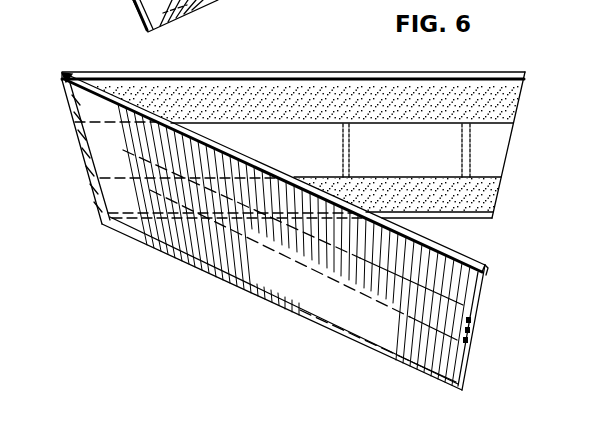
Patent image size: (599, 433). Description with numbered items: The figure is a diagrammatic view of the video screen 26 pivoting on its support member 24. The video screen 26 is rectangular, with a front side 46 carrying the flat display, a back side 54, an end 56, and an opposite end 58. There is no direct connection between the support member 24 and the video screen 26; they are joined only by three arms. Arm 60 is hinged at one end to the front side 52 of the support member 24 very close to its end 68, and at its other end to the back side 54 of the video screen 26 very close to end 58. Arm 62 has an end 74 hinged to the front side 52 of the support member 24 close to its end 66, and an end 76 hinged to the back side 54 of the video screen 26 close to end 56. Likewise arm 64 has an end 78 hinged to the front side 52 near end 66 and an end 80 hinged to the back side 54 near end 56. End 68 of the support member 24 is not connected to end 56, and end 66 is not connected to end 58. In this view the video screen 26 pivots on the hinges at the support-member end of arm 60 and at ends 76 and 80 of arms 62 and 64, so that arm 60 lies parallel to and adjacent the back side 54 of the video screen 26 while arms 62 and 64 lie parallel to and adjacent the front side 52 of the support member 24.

The support member 24 is at (327, 70).
The video screen 26 is at (182, 257).
The front side 46 is at (307, 283).
The front side 52 is at (483, 152).
The back side 54 is at (487, 277).
The end 56 is at (72, 117).
The end 58 is at (478, 308).
The arm 60 is at (328, 285).
The arm 62 is at (337, 115).
The arm 64 is at (463, 216).
The end 66 is at (510, 135).
The end 68 is at (62, 75).
The end 74 is at (513, 97).
The end 76 is at (72, 100).
The end 78 is at (482, 202).
The end 80 is at (110, 199).